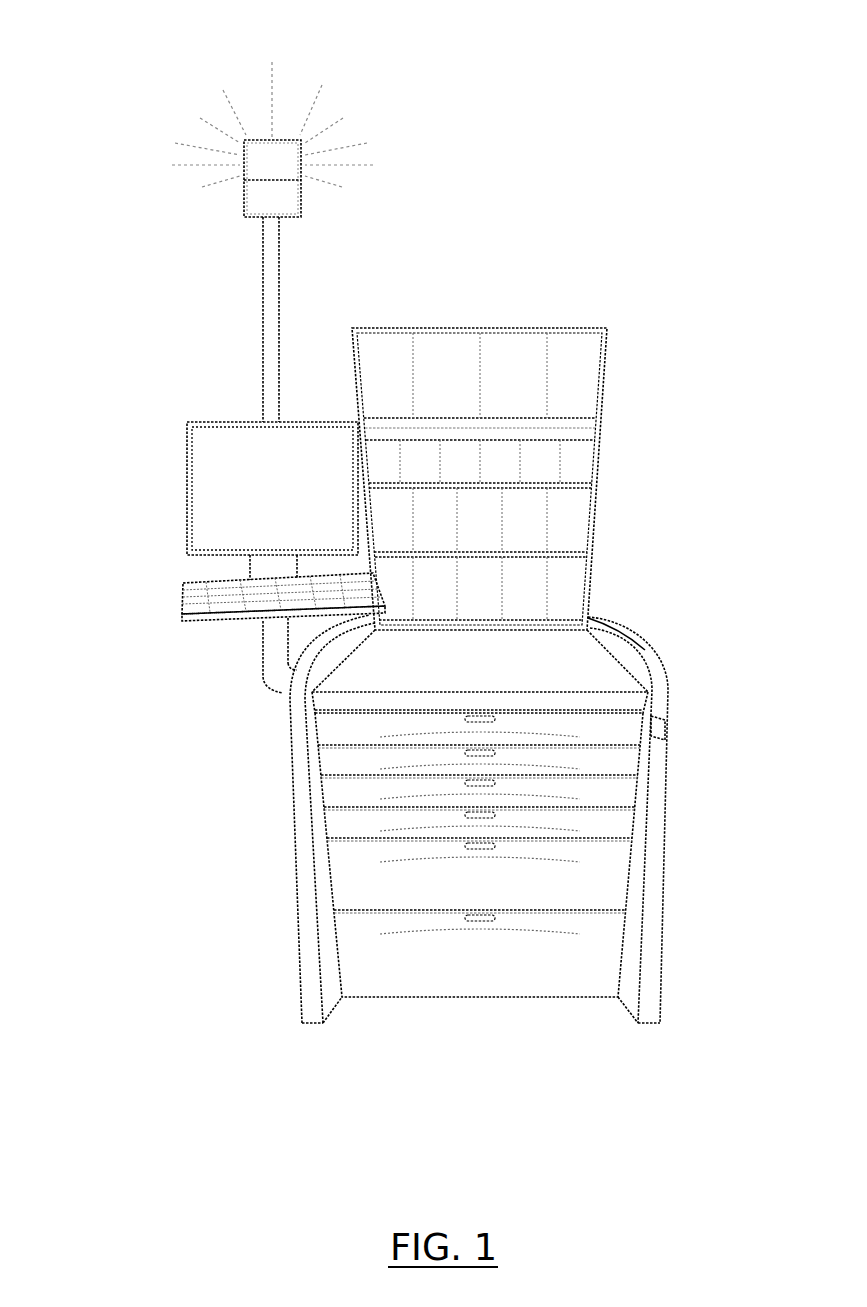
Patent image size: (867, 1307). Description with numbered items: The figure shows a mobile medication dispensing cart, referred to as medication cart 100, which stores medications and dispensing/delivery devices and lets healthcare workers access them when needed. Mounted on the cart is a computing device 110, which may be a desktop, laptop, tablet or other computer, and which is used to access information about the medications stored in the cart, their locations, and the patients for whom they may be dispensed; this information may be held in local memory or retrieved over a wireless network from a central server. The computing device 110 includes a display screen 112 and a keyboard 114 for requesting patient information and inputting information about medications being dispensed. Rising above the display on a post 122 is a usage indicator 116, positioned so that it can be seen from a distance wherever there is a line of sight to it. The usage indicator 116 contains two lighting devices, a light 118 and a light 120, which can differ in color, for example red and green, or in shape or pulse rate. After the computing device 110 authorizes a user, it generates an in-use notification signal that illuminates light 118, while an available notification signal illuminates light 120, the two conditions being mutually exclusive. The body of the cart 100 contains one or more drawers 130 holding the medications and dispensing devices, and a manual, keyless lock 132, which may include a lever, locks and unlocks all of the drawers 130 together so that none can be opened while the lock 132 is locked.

The medication cart 100 is at (243, 302).
The computing device 110 is at (256, 414).
The display screen 112 is at (283, 427).
The keyboard 114 is at (252, 617).
The usage indicator 116 is at (286, 128).
The light 118 is at (253, 155).
The light 120 is at (292, 203).
The pole 122 is at (270, 287).
The drawers 130 is at (342, 795).
The lock 132 is at (660, 737).